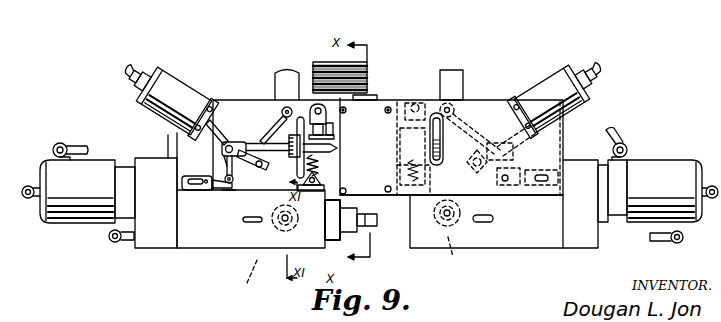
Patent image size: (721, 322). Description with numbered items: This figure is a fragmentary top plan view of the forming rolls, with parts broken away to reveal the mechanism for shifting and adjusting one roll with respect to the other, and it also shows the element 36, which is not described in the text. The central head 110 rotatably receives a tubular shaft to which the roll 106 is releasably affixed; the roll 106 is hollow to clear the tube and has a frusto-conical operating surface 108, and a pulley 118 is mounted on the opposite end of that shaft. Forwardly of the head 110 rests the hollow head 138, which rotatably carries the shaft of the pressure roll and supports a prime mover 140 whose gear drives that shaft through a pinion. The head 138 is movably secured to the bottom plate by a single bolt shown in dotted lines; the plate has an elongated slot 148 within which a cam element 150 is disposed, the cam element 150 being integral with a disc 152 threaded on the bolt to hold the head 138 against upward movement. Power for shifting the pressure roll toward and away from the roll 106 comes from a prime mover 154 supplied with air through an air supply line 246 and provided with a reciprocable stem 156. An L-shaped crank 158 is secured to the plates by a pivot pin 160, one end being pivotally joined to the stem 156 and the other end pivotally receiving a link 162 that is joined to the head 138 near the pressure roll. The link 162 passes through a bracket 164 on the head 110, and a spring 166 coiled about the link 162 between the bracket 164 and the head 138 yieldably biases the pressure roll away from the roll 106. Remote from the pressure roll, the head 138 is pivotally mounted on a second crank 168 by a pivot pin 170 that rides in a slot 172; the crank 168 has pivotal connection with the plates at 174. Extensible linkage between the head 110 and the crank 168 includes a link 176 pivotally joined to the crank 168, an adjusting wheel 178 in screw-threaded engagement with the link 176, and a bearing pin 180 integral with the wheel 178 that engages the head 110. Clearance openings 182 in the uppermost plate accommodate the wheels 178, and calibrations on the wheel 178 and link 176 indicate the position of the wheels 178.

The post 36 is at (452, 78).
The roll 106 is at (373, 217).
The frusto-conical operating surface 108 is at (372, 225).
The central head 110 is at (354, 172).
The pulley 118 is at (395, 58).
The hollow head 138 is at (190, 244).
The prime mover 140 is at (63, 220).
The elongated slot 148 is at (282, 235).
The cam element 150 is at (270, 226).
The disc 152 is at (272, 228).
The prime mover 154 is at (205, 70).
The reciprocable stem 156 is at (215, 132).
The L-shaped crank 158 is at (277, 112).
The pivot pin 160 is at (300, 72).
The link 162 is at (327, 118).
The bracket 164 is at (334, 136).
The spring 166 is at (335, 148).
The second crank 168 is at (223, 161).
The pivot pin 170 is at (200, 190).
The slot 172 is at (190, 188).
The pivotal connection 174 is at (228, 184).
The link 176 is at (234, 145).
The adjusting wheel 178 is at (250, 181).
The bearing pin 180 is at (300, 156).
The clearance openings 182 is at (442, 173).
The air supply line 246 is at (124, 92).